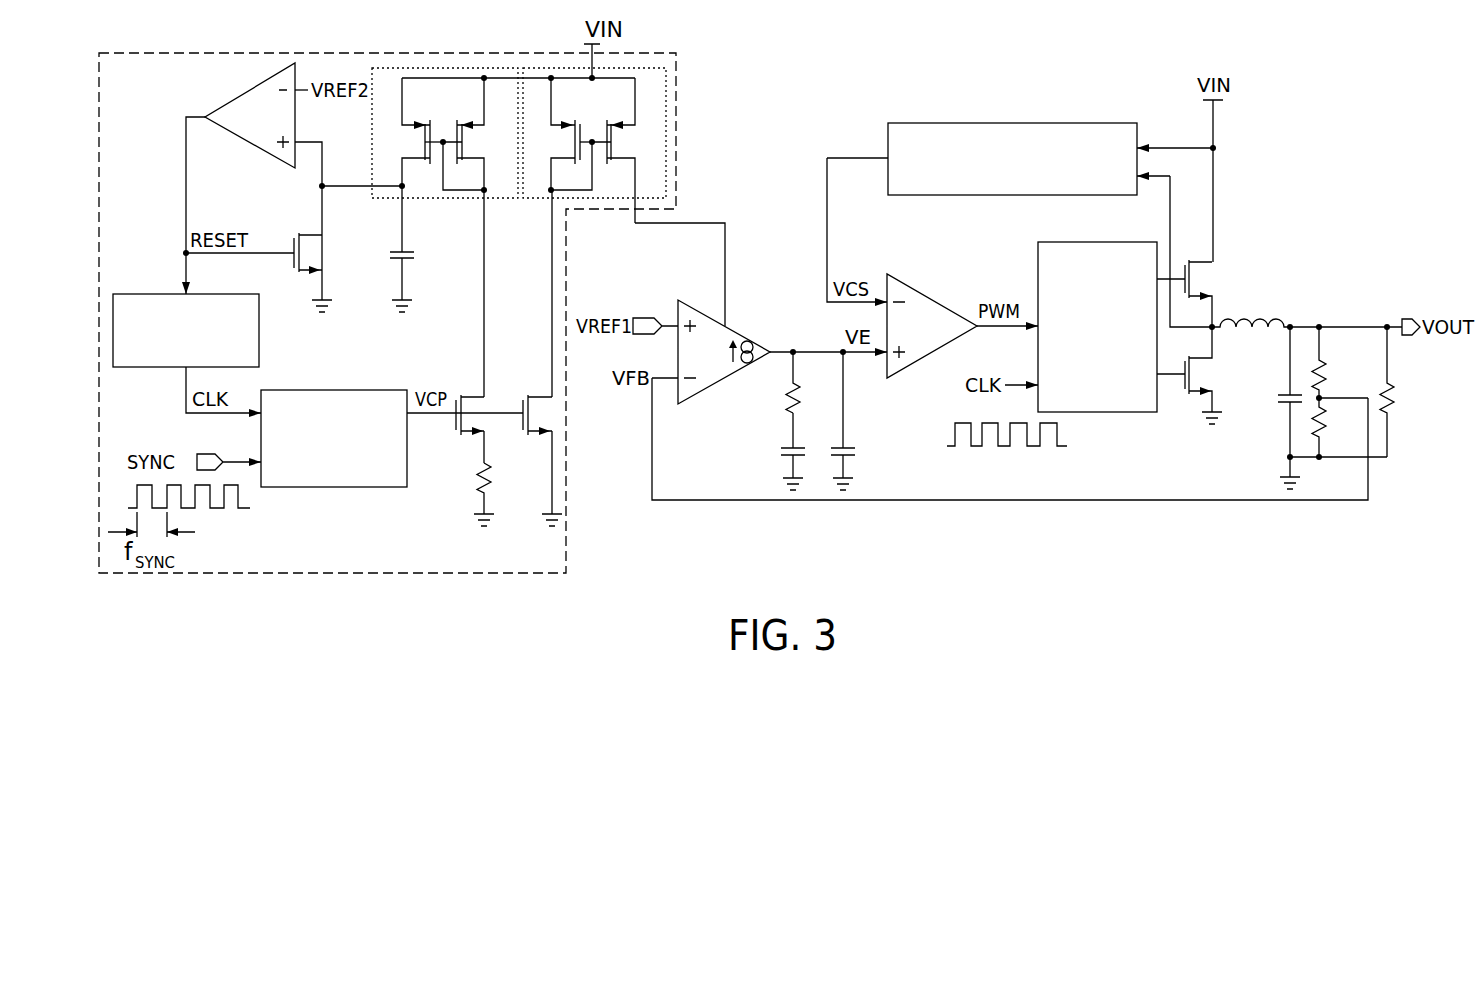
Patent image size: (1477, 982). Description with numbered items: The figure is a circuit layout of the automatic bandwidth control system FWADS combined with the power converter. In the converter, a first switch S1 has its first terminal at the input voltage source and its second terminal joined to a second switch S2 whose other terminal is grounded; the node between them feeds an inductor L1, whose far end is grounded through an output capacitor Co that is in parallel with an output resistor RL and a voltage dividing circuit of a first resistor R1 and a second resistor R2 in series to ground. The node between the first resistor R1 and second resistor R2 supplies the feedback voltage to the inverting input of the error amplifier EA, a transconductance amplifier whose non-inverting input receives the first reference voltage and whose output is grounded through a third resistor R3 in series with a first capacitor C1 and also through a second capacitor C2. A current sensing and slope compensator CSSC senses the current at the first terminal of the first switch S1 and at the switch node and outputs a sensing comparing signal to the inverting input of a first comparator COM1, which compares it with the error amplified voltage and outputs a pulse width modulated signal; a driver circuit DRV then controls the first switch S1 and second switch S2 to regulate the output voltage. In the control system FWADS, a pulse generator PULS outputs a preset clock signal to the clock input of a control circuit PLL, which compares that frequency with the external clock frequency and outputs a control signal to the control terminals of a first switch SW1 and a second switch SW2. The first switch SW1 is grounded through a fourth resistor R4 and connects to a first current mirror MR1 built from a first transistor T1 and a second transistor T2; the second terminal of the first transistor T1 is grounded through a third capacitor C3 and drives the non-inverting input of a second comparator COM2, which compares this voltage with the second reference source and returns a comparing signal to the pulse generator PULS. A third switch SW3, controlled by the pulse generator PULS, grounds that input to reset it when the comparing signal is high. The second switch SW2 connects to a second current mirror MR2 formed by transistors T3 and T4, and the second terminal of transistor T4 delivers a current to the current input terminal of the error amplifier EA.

The automatic bandwidth control system FWADS is at (676, 92).
The second comparator COM2 is at (246, 103).
The first current mirror MR1 is at (445, 107).
The second current mirror MR2 is at (605, 120).
The first transistor T1 is at (410, 132).
The second transistor T2 is at (474, 134).
The first transistor T3 is at (560, 134).
The second transistor T4 is at (604, 150).
The first switch SW1 is at (465, 400).
The second switch SW2 is at (532, 400).
The third switch SW3 is at (328, 272).
The third capacitor C3 is at (414, 249).
The fourth resistor R4 is at (468, 494).
The pulse generator PULS is at (259, 333).
The control circuit PLL is at (363, 487).
The error amplifier EA is at (728, 334).
The third resistor R3 is at (780, 382).
The first capacitor C1 is at (783, 451).
The second capacitor C2 is at (855, 421).
The first comparator COM1 is at (932, 300).
The current sensing and slope compensator CSSC is at (1012, 122).
The driver circuit DRV is at (1100, 412).
The first switch S1 is at (1196, 293).
The second switch S2 is at (1196, 375).
The inductor L1 is at (1251, 312).
The output capacitor Co is at (1280, 408).
The first resistor R1 is at (1334, 362).
The second resistor R2 is at (1334, 427).
The output resistor RL is at (1403, 392).